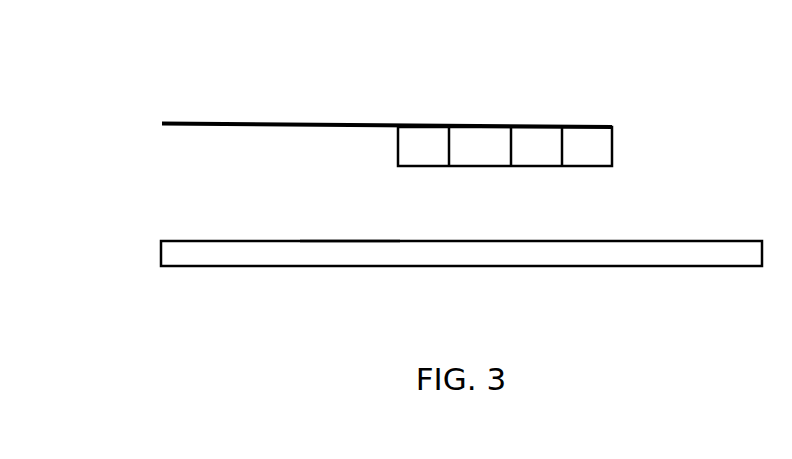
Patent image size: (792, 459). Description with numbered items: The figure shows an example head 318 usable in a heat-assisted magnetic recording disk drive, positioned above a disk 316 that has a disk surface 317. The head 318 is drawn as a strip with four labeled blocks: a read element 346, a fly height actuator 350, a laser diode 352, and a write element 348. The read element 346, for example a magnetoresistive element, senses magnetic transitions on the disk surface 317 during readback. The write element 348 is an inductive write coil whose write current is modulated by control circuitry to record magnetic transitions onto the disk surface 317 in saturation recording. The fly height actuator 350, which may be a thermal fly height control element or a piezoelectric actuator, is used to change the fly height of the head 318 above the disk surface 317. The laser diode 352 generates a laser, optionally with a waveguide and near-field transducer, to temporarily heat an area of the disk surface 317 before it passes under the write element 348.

The disk 316 is at (168, 245).
The disk surface 317 is at (347, 230).
The head 318 is at (636, 128).
The read element 346 is at (405, 127).
The fly height actuator 350 is at (468, 127).
The laser diode 352 is at (530, 127).
The write element 348 is at (580, 127).